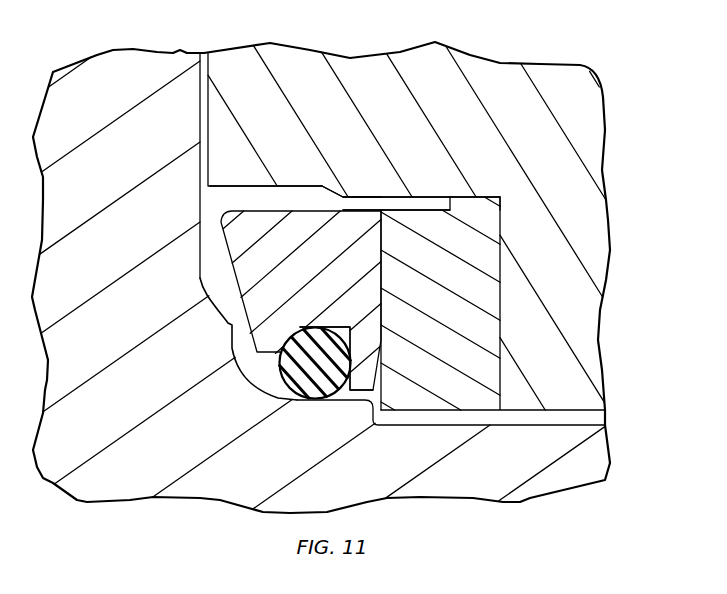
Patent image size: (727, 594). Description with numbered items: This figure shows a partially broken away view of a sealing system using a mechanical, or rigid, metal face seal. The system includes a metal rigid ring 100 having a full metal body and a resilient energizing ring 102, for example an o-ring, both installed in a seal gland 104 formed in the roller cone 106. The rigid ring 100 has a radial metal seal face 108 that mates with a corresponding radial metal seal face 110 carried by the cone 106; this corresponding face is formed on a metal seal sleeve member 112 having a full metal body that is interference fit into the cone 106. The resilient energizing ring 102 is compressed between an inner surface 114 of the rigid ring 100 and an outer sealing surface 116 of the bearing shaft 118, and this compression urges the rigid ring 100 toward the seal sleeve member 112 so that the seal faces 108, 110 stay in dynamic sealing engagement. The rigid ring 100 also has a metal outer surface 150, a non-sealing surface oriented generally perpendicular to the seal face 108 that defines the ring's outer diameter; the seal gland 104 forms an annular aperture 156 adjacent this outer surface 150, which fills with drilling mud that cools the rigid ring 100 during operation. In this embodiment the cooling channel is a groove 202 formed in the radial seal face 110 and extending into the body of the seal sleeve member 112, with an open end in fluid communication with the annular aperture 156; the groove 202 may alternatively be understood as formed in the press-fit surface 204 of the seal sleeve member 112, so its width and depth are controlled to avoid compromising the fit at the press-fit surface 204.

The rigid ring 100 is at (280, 287).
The resilient energizing ring 102 is at (282, 364).
The seal gland 104 is at (266, 128).
The roller cone 106 is at (588, 224).
The radial metal seal face 108 is at (381, 276).
The radial metal seal face 110 is at (375, 210).
The seal sleeve member 112 is at (491, 334).
The inner surface 114 is at (359, 326).
The outer sealing surface 116 is at (303, 399).
The bearing shaft 118 is at (455, 470).
The outer surface 150 is at (262, 211).
The annular aperture 156 is at (303, 200).
The groove 202 is at (428, 203).
The press-fit surface 204 is at (490, 199).